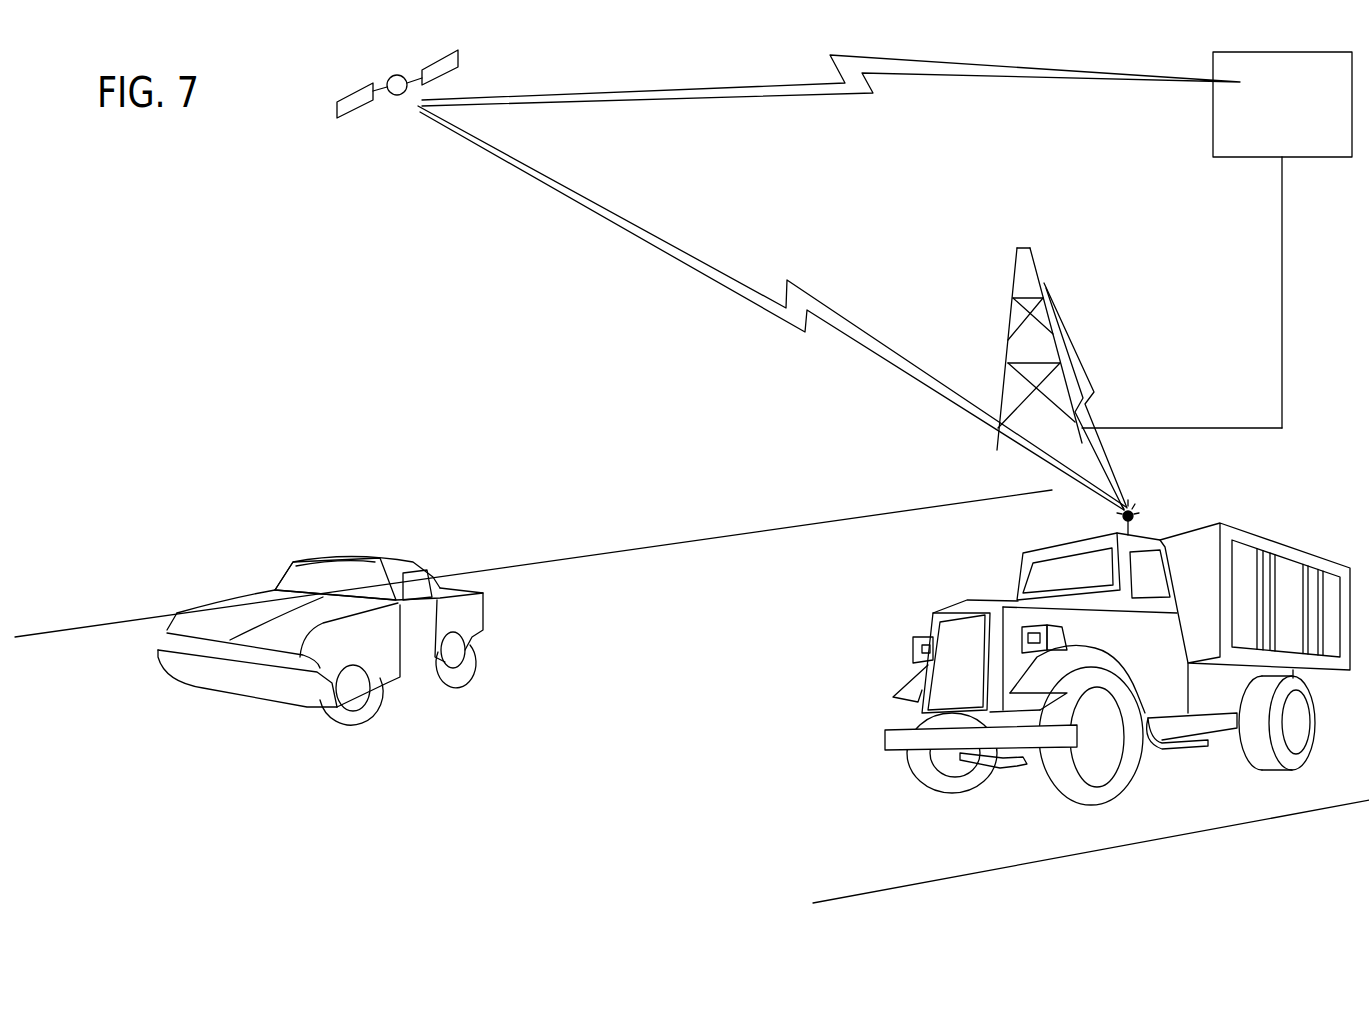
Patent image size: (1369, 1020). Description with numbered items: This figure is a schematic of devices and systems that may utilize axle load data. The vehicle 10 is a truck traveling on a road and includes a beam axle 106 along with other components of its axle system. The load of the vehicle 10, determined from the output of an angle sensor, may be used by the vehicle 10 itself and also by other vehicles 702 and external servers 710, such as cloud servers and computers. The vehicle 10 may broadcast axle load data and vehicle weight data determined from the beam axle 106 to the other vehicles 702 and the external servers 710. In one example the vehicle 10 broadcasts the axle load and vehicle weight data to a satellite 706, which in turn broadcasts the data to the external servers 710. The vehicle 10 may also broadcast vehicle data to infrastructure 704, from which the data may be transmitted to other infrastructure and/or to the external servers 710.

The vehicle 10 is at (1117, 647).
The beam axle 106 is at (1000, 768).
The other vehicles 702 is at (406, 528).
The infrastructure 704 is at (1050, 252).
The satellite 706 is at (389, 115).
The external servers 710 is at (1217, 240).